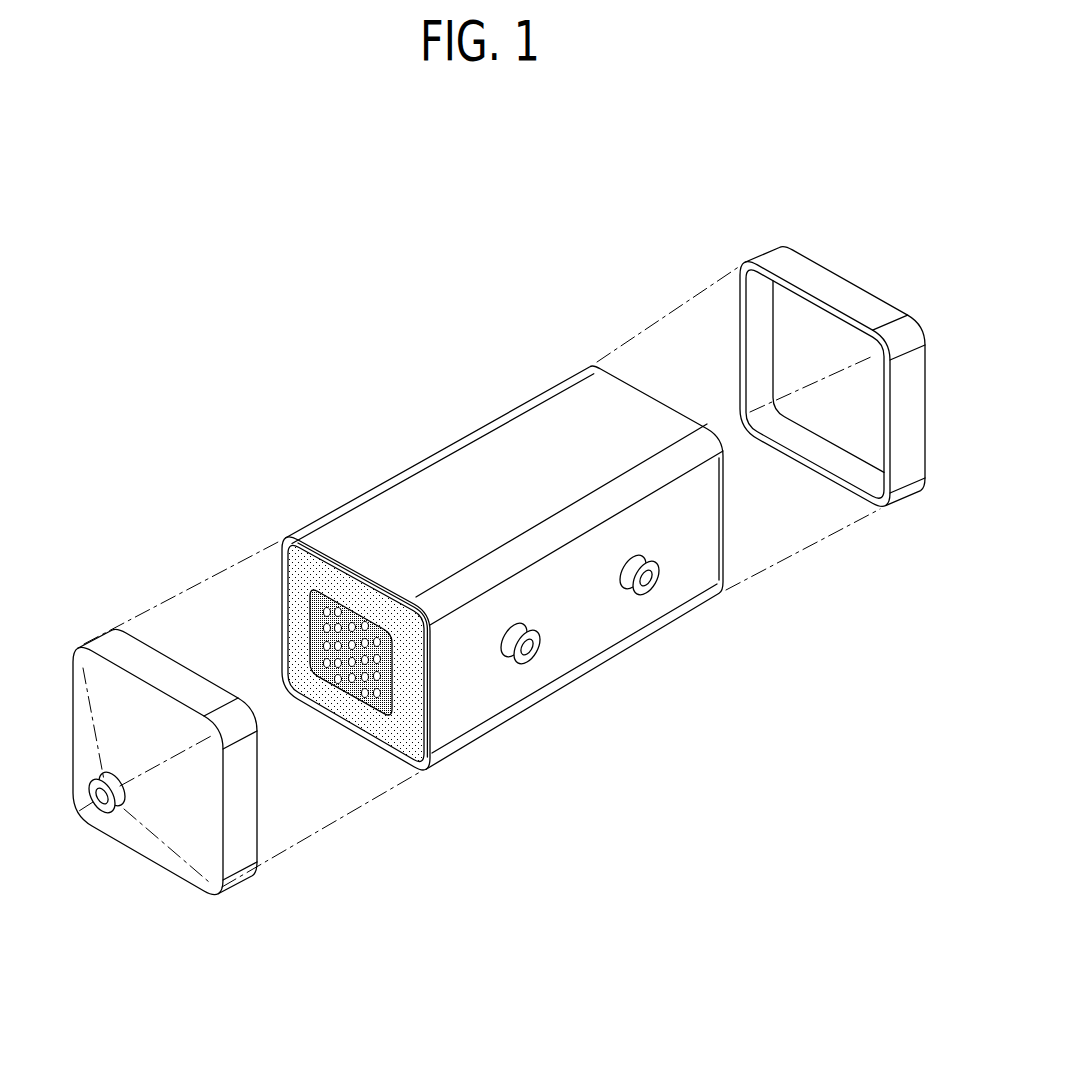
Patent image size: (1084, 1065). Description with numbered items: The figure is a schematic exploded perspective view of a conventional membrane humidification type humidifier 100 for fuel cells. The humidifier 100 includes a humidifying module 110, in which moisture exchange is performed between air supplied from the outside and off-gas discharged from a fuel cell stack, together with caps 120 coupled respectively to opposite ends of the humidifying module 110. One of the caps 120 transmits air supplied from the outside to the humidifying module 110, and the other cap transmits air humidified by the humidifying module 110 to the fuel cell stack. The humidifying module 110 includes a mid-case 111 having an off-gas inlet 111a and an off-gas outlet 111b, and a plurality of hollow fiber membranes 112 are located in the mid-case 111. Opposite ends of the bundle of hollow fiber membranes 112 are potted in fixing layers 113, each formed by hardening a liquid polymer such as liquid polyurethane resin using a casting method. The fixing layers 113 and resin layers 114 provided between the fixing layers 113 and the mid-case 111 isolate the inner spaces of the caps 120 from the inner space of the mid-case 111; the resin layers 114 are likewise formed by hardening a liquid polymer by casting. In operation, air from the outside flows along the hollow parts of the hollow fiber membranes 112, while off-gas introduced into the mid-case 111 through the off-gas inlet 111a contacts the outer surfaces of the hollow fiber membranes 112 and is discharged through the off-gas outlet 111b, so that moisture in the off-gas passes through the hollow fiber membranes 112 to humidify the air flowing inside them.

The membrane humidification type humidifier 100 is at (485, 205).
The humidifying module 110 is at (452, 441).
The mid-case 111 is at (685, 573).
The off-gas inlet 111a is at (522, 660).
The off-gas outlet 111b is at (641, 594).
The hollow fiber membranes 112 is at (365, 698).
The fixing layers 113 is at (383, 703).
The resin layers 114 is at (298, 580).
The caps 120 is at (828, 283).